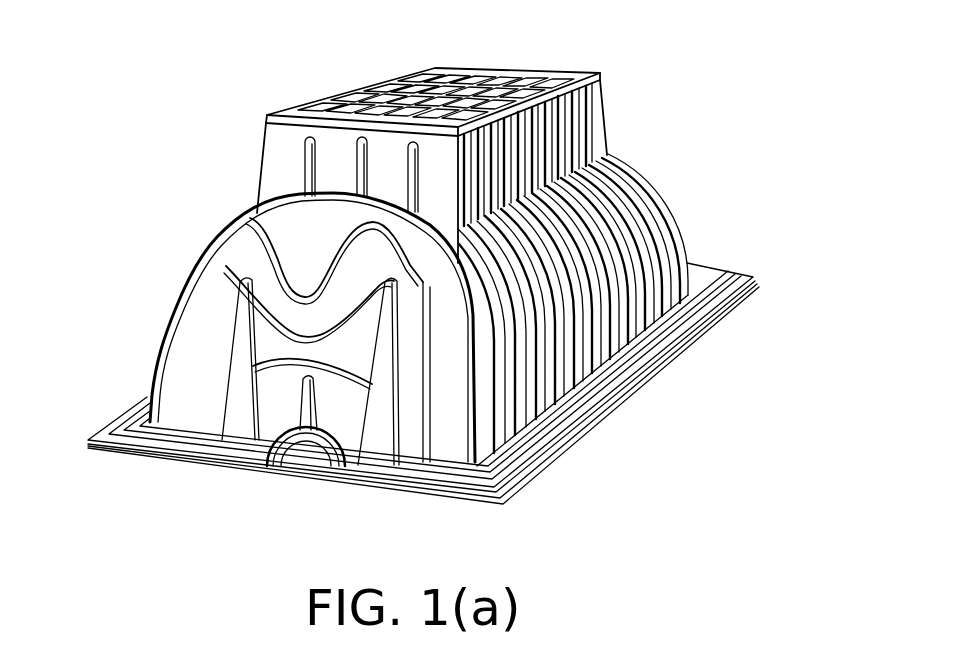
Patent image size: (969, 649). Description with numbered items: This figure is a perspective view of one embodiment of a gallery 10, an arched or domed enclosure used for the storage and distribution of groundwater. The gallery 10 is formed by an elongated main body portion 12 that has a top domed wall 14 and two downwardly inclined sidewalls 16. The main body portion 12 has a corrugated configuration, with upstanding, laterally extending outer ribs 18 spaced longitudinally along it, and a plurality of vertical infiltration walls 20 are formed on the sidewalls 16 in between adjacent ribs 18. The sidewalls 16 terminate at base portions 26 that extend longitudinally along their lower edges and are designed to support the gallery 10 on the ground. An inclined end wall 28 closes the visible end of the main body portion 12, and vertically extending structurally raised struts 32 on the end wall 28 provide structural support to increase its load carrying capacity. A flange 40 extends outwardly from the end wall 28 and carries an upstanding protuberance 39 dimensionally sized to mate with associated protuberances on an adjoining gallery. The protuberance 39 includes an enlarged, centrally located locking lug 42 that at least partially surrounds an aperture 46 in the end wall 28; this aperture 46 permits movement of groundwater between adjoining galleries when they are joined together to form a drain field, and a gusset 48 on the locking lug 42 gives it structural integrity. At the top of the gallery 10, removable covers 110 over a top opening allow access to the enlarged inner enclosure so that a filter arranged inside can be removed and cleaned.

The gallery 10 is at (668, 68).
The main body portion 12 is at (258, 181).
The top domed wall 14 is at (287, 197).
The sidewalls 16 is at (575, 410).
The outer ribs 18 is at (688, 264).
The vertical infiltration walls 20 is at (528, 428).
The base portions 26 is at (613, 405).
The end wall 28 is at (427, 493).
The struts 32 is at (383, 460).
The protuberance 39 is at (207, 430).
The flange 40 is at (108, 442).
The locking lug 42 is at (337, 458).
The aperture 46 is at (302, 458).
The gusset 48 is at (262, 462).
The removable covers 110 is at (584, 72).